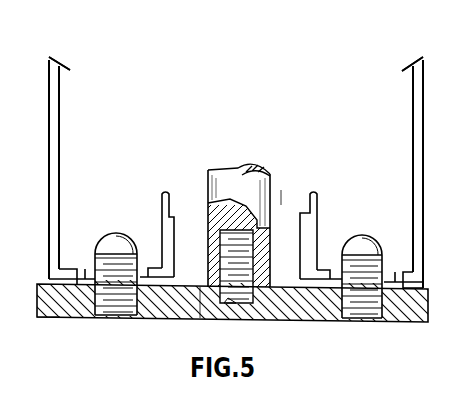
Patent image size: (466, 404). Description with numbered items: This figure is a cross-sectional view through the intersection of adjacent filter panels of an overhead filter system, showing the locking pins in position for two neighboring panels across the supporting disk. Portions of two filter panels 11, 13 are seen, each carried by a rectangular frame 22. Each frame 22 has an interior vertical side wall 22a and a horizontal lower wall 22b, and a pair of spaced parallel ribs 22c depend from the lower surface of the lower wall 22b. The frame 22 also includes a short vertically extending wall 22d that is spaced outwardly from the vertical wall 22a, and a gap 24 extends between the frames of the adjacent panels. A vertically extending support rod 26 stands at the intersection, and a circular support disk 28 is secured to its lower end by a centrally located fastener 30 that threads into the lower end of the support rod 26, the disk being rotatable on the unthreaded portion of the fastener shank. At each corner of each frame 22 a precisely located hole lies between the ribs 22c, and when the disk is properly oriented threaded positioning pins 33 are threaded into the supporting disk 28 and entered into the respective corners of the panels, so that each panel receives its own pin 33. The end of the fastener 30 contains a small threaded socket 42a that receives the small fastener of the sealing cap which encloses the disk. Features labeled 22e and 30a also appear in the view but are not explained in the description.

The filter panel 11 is at (85, 63).
The filter panel 13 is at (395, 70).
The rectangular frame 22 is at (251, 214).
The interior vertical side wall 22a is at (60, 143).
The horizontal lower wall 22b is at (70, 269).
The ribs 22c is at (53, 318).
The short vertically extending wall 22d is at (162, 232).
The bracket flange 22e is at (421, 288).
The gap 24 is at (283, 210).
The vertically extending support rod 26 is at (221, 193).
The circular support disk 28 is at (322, 307).
The fastener 30 is at (258, 321).
The plate opening 30a is at (205, 310).
The threaded positioning pins 33 is at (112, 320).
The small threaded socket 42a is at (232, 305).